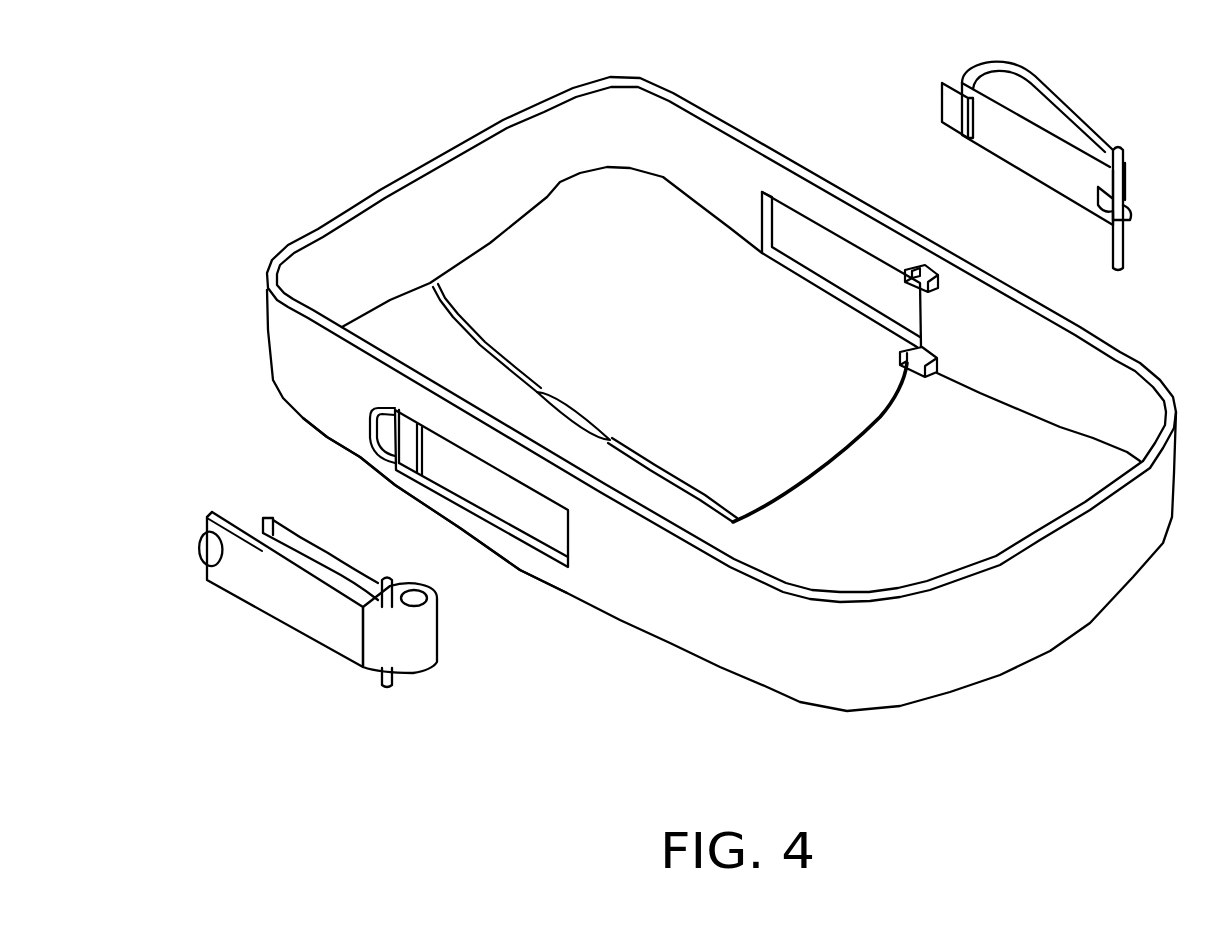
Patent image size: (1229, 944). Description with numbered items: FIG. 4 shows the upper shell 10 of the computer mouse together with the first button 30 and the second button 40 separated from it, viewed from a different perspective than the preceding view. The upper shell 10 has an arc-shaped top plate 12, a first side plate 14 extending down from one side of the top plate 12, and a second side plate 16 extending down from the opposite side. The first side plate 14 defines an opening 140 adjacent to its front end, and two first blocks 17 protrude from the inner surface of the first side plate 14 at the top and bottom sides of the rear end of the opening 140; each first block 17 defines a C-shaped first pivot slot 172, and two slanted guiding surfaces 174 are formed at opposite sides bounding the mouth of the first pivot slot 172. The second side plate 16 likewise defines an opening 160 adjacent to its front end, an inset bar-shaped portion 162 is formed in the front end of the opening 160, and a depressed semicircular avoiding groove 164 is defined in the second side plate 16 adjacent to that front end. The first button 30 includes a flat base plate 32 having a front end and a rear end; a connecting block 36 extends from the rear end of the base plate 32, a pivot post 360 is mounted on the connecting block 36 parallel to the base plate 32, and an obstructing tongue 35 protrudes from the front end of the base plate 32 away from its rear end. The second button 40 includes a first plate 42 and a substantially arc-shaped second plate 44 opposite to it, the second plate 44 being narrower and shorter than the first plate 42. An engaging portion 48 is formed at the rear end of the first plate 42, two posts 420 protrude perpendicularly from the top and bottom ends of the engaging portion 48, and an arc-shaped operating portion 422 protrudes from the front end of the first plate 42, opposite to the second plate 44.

The upper shell 10 is at (432, 123).
The top plate 12 is at (983, 477).
The first side plate 14 is at (705, 150).
The second side plate 16 is at (742, 630).
The opening 140 is at (790, 228).
The first block 17 is at (913, 270).
The first pivot slot 172 is at (927, 276).
The slanted guiding surfaces 174 is at (908, 280).
The opening 160 is at (543, 523).
The inset bar-shaped portion 162 is at (407, 460).
The loop 164 is at (390, 427).
The first button 30 is at (1100, 95).
The base plate 32 is at (1067, 173).
The obstructing tongue 35 is at (948, 107).
The connecting block 36 is at (1128, 216).
The pivot post 360 is at (1124, 158).
The second button 40 is at (280, 638).
The first plate 42 is at (253, 580).
The operating portion 422 is at (207, 546).
The second plate 44 is at (333, 567).
The engaging portion 48 is at (427, 638).
The posts 420 is at (383, 687).